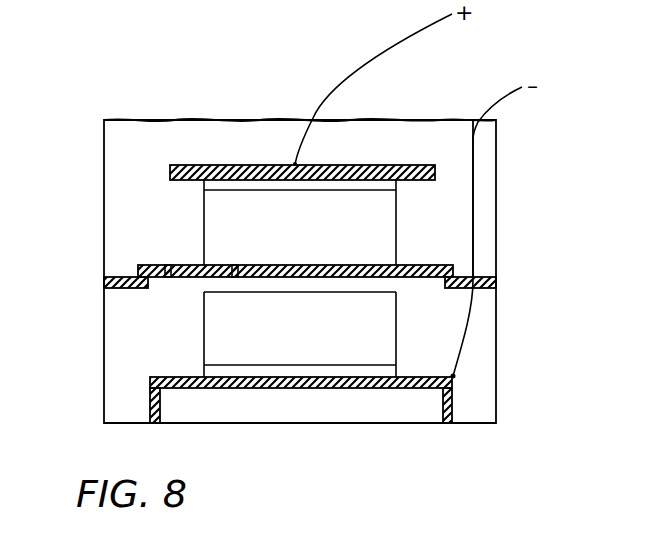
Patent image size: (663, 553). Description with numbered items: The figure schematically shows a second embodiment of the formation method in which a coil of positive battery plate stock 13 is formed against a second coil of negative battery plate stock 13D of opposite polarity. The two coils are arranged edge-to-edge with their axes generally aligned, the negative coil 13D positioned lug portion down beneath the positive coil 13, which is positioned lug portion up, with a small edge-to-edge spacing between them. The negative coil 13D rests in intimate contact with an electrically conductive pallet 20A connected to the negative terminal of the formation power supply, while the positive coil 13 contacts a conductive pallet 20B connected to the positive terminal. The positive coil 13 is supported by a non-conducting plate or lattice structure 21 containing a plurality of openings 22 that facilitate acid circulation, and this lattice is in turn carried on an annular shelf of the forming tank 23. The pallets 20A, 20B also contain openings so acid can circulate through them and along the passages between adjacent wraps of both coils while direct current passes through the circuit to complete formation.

The conductive pallet 20B is at (372, 164).
The coil of positive battery plate stock 13 is at (398, 213).
The non-conducting plate or lattice structure 21 is at (404, 263).
The forming tank 23 is at (120, 277).
The openings 22 is at (236, 265).
The coil of negative battery plate stock 13D is at (203, 332).
The conductive pallet 20A is at (453, 400).